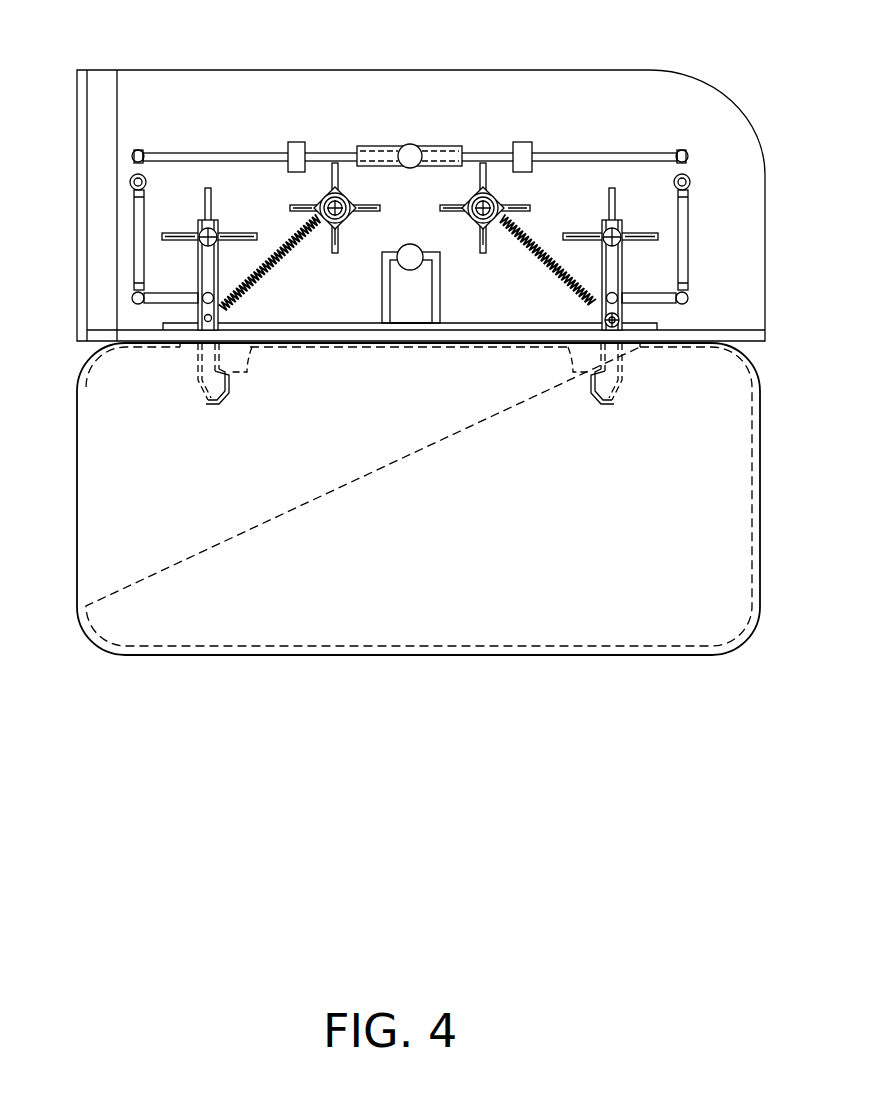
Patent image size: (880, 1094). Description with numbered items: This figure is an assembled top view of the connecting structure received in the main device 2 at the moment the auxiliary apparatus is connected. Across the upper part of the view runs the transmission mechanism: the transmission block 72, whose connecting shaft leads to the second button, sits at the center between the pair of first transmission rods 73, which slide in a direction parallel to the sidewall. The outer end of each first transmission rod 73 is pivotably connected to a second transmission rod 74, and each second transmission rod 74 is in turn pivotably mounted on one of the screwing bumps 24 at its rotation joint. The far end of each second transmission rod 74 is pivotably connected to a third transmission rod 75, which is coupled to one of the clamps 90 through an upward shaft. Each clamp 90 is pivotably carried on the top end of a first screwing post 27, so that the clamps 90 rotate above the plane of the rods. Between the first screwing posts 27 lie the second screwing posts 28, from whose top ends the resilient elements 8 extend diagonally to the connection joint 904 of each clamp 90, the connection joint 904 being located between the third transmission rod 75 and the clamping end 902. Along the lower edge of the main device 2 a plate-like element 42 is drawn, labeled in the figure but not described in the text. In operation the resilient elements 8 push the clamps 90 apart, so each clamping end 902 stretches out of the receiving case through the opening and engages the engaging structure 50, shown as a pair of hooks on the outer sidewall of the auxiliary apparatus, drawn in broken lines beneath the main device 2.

The main device 2 is at (700, 90).
The resilient elements 8 is at (278, 240).
The screwing bumps 24 is at (130, 180).
The first screwing posts 27 is at (205, 188).
The second screwing posts 28 is at (326, 192).
The bottom plate 42 is at (167, 325).
The engaging structure 50 is at (575, 377).
The transmission block 72 is at (435, 146).
The first transmission rods 73 is at (170, 155).
The second transmission rods 74 is at (138, 242).
The third transmission rods 75 is at (165, 297).
The clamps 90 is at (612, 262).
The clamping end 902 is at (205, 397).
The connection joint 904 is at (619, 319).